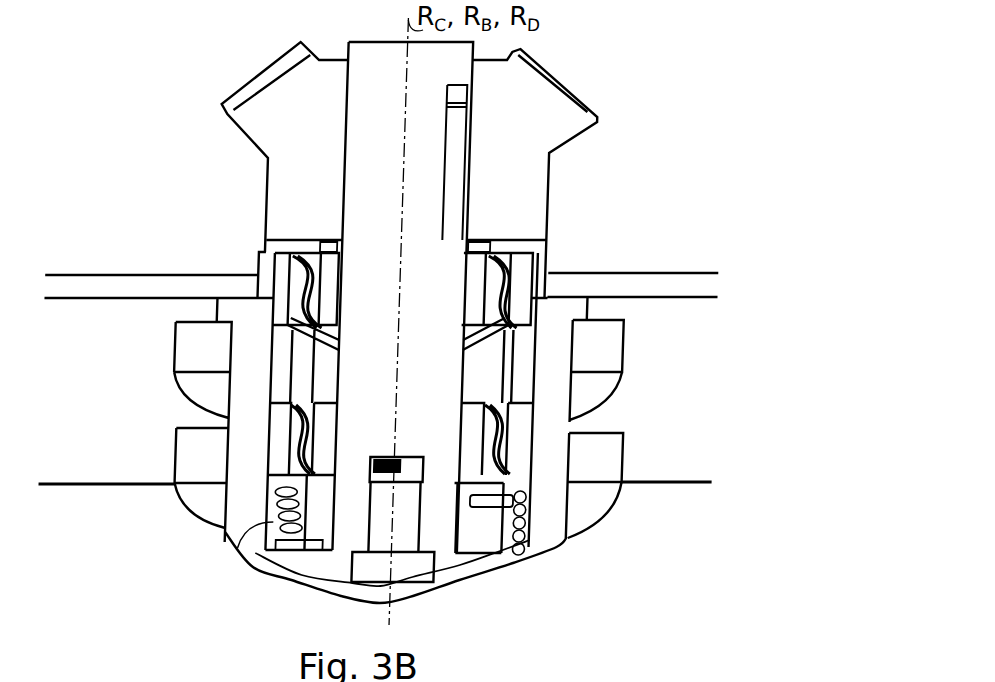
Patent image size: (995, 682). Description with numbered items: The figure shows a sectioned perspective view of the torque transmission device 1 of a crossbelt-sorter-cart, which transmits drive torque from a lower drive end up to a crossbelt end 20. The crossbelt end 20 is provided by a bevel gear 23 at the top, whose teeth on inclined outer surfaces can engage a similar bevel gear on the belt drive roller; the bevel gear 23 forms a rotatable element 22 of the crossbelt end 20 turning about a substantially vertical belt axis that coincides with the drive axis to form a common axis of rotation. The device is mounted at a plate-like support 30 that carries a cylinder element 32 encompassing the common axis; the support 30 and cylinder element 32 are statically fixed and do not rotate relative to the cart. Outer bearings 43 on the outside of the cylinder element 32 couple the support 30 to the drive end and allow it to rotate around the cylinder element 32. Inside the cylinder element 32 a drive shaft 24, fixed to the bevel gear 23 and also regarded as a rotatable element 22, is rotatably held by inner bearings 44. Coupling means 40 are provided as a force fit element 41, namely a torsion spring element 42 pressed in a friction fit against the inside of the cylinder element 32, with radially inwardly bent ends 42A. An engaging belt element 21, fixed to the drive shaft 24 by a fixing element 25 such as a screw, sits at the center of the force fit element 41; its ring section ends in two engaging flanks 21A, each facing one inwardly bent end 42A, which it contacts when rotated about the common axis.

The torque transmission device 1 is at (678, 166).
The crossbelt end 20 is at (279, 117).
The rotatable element 22 is at (349, 278).
The bevel gear 23 is at (531, 110).
The drive shaft 24 is at (376, 64).
The fixing element 25 is at (396, 573).
The support 30 is at (617, 284).
The cylinder element 32 is at (567, 521).
The coupling means 40 is at (576, 557).
The force fit element 41 is at (576, 557).
The spring element 42 is at (527, 565).
The inwardly bent ends 42A is at (490, 432).
The outer bearings 43 is at (209, 353).
The inner bearings 44 is at (293, 268).
The engaging belt element 21 is at (466, 573).
The engaging flanks 21A is at (255, 548).